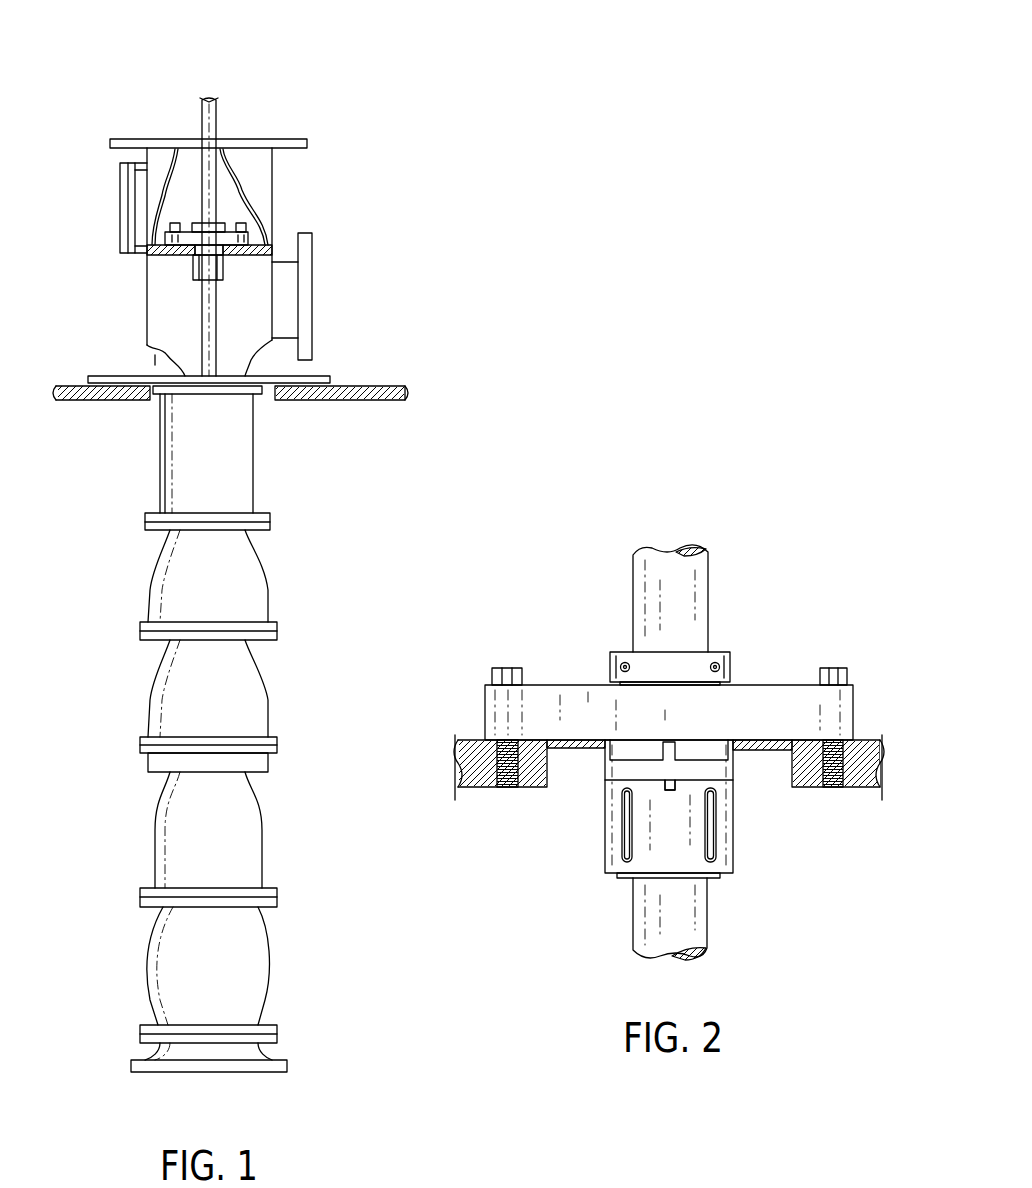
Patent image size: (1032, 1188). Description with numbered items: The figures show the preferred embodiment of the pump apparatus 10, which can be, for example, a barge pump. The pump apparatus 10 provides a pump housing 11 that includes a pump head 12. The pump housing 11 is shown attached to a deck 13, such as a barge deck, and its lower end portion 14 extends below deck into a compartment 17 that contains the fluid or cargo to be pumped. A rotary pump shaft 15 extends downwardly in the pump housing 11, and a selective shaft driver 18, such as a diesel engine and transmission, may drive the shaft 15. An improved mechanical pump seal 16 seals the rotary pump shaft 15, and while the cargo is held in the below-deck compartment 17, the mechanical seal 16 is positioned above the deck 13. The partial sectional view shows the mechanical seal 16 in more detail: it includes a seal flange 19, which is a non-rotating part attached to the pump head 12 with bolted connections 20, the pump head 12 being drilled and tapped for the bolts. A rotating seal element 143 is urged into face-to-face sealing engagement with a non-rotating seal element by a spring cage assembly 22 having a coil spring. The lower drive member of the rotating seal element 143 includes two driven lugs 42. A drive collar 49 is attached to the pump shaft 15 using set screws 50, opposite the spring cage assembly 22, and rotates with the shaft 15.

In FIG. 1, the pump apparatus 10 is at (403, 128).
In FIG. 1, the pump housing 11 is at (146, 294).
In FIG. 1, the pump head 12 is at (250, 257).
In FIG. 2, the pump head 12 is at (472, 790).
In FIG. 1, the deck 13 is at (372, 380).
In FIG. 1, the lower end portion 14 is at (142, 982).
In FIG. 1, the rotary pump shaft 15 is at (220, 126).
In FIG. 2, the rotary pump shaft 15 is at (633, 585).
In FIG. 1, the mechanical pump seal 16 is at (262, 222).
In FIG. 2, the mechanical pump seal 16 is at (493, 566).
In FIG. 1, the compartment 17 is at (100, 600).
In FIG. 1, the shaft driver 18 is at (196, 100).
In FIG. 2, the seal flange 19 is at (586, 685).
In FIG. 2, the bolted connections 20 is at (500, 668).
In FIG. 2, the spring cage assembly 22 is at (669, 809).
In FIG. 2, the driven lugs 42 is at (680, 795).
In FIG. 2, the drive collar 49 is at (690, 665).
In FIG. 2, the set screws 50 is at (721, 666).
In FIG. 2, the rotating seal element 143 is at (605, 752).